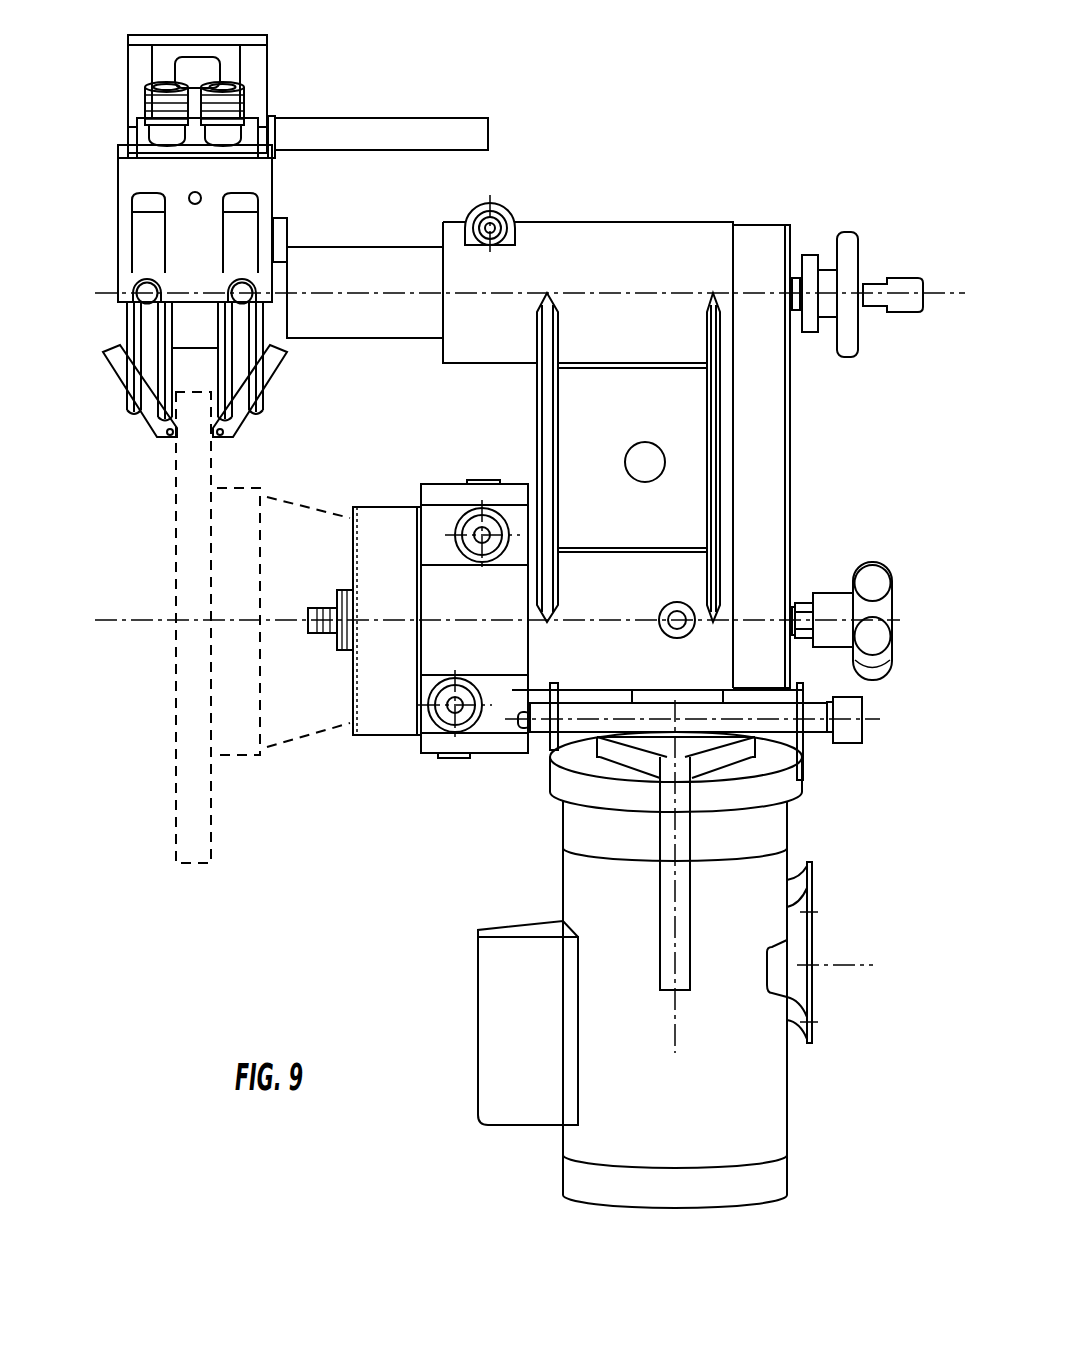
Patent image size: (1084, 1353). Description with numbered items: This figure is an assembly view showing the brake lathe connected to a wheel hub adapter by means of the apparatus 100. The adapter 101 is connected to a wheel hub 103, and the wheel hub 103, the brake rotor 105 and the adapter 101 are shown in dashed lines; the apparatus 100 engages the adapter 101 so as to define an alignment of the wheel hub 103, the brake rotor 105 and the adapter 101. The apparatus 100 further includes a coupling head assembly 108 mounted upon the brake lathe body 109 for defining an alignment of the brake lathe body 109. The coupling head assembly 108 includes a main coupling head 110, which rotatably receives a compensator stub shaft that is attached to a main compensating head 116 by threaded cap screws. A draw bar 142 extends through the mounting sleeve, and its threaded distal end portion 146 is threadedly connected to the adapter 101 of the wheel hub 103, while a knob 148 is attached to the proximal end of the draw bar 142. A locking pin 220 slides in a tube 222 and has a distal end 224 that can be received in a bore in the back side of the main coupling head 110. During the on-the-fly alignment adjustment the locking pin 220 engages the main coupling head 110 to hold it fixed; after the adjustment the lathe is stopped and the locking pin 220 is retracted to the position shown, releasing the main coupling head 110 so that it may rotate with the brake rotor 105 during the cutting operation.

The apparatus 100 is at (470, 772).
The adapter 101 is at (305, 497).
The wheel hub 103 is at (260, 488).
The brake rotor 105 is at (178, 848).
The coupling head assembly 108 is at (425, 492).
The brake lathe body 109 is at (760, 515).
The main coupling head 110 is at (500, 745).
The main compensating head 116 is at (383, 718).
The draw bar 142 is at (316, 640).
The threaded distal end portion 146 is at (322, 620).
The knob 148 is at (868, 578).
The locking pin 220 is at (820, 710).
The tube 222 is at (783, 728).
The distal end 224 is at (520, 722).